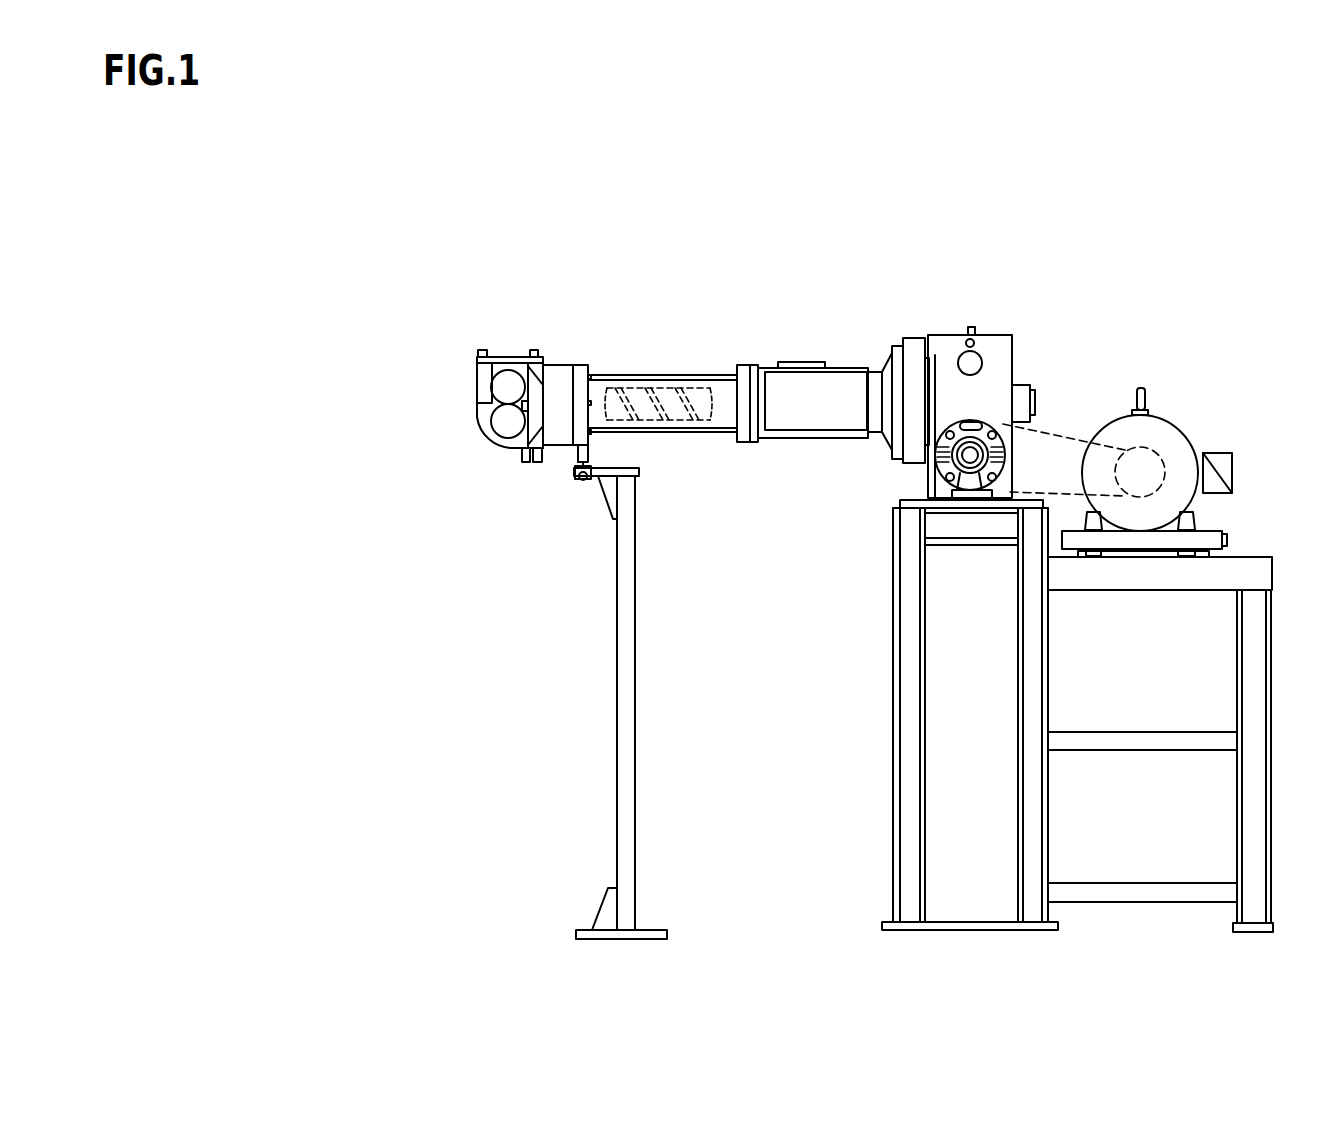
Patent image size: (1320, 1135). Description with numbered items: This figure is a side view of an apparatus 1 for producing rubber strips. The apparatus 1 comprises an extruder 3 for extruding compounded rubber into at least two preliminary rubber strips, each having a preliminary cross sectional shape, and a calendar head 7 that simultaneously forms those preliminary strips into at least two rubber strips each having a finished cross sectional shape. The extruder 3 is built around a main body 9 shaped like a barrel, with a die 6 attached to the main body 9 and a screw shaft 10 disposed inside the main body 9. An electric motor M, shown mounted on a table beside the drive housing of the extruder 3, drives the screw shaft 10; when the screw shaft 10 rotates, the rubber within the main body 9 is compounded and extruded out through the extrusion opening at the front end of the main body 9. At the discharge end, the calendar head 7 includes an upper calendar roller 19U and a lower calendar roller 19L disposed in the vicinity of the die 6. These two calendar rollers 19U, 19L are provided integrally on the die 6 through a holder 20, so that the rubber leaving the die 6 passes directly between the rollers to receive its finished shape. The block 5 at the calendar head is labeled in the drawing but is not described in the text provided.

The apparatus for producing rubber strips 1 is at (1058, 315).
The extruder 3 is at (800, 358).
The head block 5 is at (489, 434).
The die 6 is at (562, 367).
The calendar head 7 is at (413, 386).
The main body 9 is at (710, 375).
The screw shaft 10 is at (637, 386).
The upper calendar roller 19U is at (508, 388).
The lower calendar roller 19L is at (488, 433).
The holder 20 is at (480, 377).
The electric motor M is at (1183, 420).